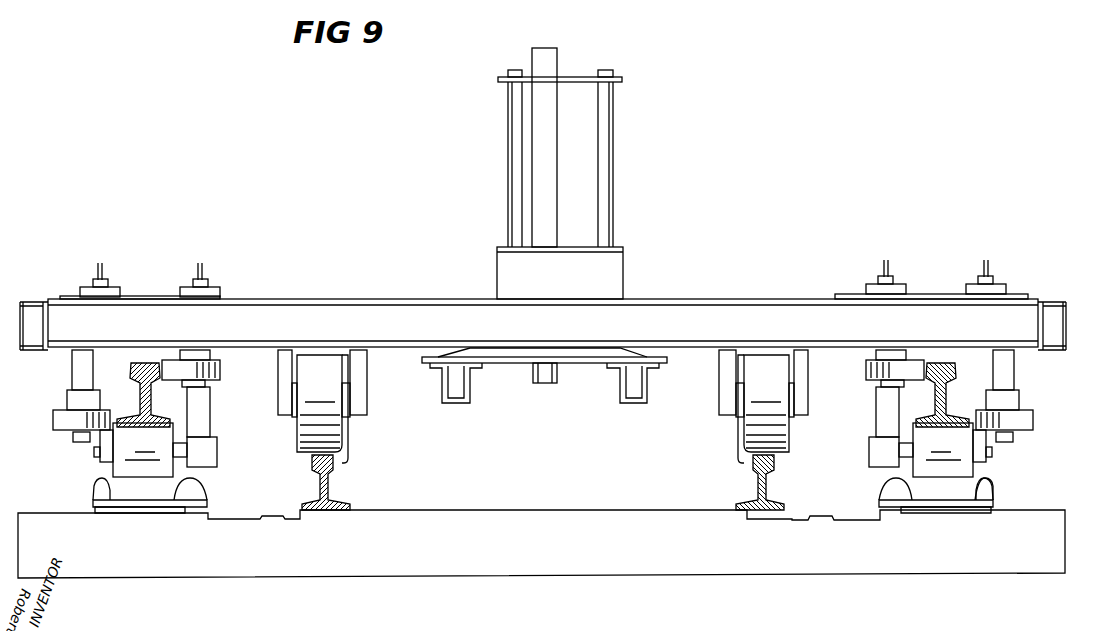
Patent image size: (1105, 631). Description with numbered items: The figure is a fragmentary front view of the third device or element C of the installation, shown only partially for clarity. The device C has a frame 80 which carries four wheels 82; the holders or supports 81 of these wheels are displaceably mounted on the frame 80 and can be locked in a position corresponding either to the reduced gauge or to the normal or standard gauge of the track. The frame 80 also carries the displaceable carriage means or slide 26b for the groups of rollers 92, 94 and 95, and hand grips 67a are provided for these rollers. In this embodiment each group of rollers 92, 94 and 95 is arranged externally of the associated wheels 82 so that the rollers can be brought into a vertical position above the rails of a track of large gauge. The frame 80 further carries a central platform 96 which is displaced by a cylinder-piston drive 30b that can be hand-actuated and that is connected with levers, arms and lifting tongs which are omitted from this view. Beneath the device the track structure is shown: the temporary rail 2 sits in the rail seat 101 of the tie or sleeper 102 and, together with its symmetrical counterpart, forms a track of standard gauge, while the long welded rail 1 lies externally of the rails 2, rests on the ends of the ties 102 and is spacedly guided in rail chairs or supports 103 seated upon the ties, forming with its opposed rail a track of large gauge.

The rail 1 is at (155, 393).
The temporary rail 2 is at (330, 487).
The slide 26b is at (928, 293).
The cylinder-piston drive 30b is at (548, 162).
The hand grips 67a is at (884, 270).
The frame 80 is at (655, 312).
The wheel holders 81 is at (362, 395).
The wheels 82 is at (335, 430).
The rollers 92 is at (152, 457).
The rollers 94 is at (200, 372).
The rollers 95 is at (68, 418).
The central platform 96 is at (463, 400).
The rail seat 101 is at (858, 517).
The tie 102 is at (557, 562).
The rail chair 103 is at (990, 488).
The third device C is at (770, 293).